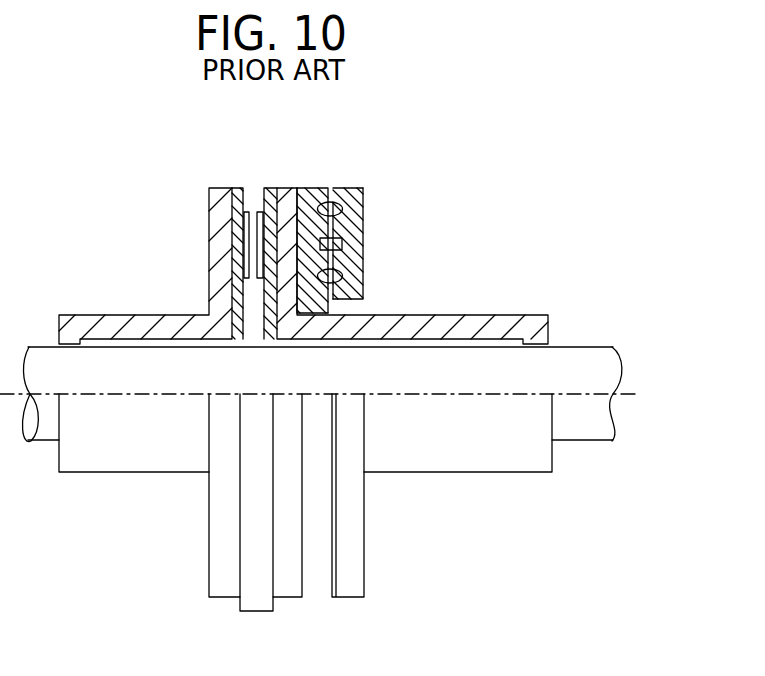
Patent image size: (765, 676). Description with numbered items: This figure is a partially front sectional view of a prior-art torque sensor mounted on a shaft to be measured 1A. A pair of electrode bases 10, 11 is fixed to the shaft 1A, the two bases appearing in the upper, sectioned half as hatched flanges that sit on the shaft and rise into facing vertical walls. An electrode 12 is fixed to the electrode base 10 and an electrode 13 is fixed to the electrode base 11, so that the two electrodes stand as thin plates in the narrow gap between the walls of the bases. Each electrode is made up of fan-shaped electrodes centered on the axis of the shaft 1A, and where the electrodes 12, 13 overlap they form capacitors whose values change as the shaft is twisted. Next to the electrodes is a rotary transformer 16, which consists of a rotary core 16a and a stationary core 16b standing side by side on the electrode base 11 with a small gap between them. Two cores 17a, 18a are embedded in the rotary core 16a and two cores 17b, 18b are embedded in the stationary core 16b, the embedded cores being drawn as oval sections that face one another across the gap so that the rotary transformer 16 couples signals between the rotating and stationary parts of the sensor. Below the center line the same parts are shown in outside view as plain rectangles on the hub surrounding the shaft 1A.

The shaft to be measured 1A is at (590, 348).
The electrode base 10 is at (110, 322).
The electrode base 11 is at (495, 320).
The electrode 12 is at (246, 225).
The electrode 13 is at (263, 258).
The rotary transformer 16 is at (327, 181).
The rotary core 16a is at (307, 190).
The stationary core 16b is at (353, 190).
The core 17a is at (335, 209).
The core 17b is at (330, 212).
The core 18a is at (335, 277).
The core 18b is at (330, 282).